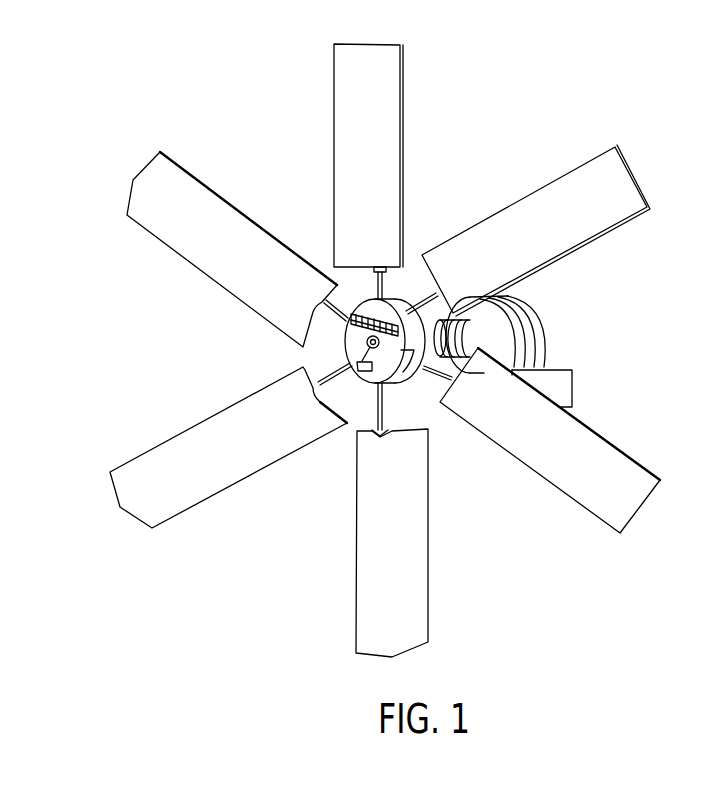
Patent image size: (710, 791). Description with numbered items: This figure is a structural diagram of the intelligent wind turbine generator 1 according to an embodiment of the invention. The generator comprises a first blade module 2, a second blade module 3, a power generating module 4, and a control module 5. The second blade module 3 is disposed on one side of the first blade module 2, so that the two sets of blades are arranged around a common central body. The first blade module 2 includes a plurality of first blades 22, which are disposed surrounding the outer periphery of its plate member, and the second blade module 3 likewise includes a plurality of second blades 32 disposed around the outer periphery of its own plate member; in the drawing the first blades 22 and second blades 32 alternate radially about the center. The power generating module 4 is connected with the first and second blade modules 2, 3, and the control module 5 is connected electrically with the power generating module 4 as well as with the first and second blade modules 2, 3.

The intelligent wind turbine generator 1 is at (22, 326).
The first blade module 2 is at (185, 278).
The second blade module 3 is at (418, 190).
The power generating module 4 is at (553, 321).
The control module 5 is at (589, 396).
The first blade 22 is at (251, 263).
The second blade 32 is at (382, 183).